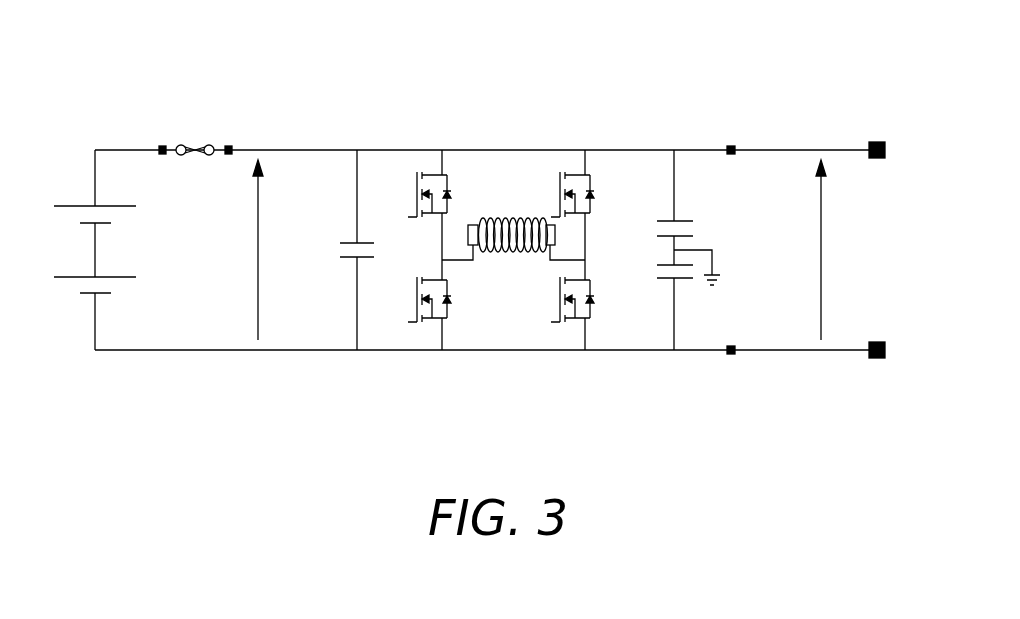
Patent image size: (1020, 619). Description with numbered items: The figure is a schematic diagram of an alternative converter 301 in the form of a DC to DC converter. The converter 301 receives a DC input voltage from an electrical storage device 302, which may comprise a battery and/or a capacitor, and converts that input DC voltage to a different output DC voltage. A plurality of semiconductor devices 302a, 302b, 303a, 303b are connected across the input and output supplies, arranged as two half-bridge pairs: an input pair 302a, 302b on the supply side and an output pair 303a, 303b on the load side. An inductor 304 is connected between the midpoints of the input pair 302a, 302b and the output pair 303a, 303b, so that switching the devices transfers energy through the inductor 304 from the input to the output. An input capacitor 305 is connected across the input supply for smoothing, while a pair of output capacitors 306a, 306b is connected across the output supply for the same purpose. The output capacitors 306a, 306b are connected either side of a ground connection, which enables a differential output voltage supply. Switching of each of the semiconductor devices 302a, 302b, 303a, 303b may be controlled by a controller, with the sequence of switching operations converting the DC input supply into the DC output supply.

The converter 301 is at (110, 98).
The electrical storage device 302 is at (73, 205).
The semiconductor device 302a is at (452, 178).
The semiconductor device 302b is at (448, 315).
The semiconductor device 303a is at (583, 172).
The semiconductor device 303b is at (591, 315).
The inductor 304 is at (503, 215).
The input capacitor 305 is at (352, 243).
The output capacitor 306a is at (681, 221).
The output capacitor 306b is at (683, 280).